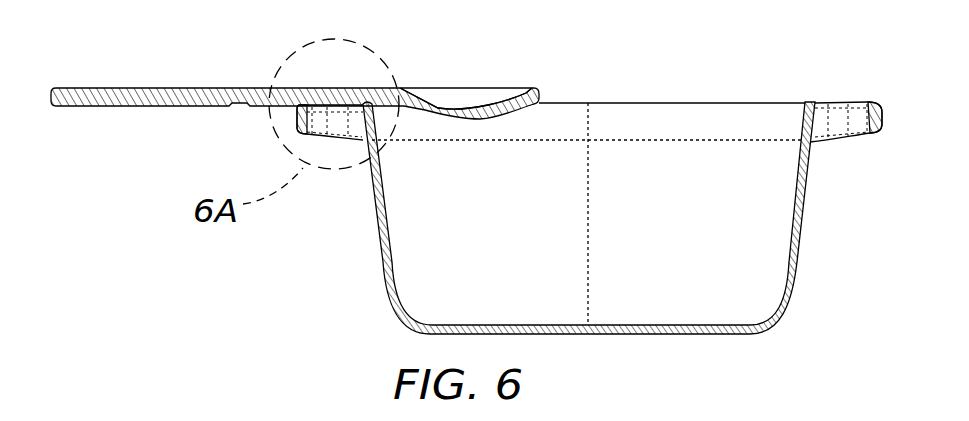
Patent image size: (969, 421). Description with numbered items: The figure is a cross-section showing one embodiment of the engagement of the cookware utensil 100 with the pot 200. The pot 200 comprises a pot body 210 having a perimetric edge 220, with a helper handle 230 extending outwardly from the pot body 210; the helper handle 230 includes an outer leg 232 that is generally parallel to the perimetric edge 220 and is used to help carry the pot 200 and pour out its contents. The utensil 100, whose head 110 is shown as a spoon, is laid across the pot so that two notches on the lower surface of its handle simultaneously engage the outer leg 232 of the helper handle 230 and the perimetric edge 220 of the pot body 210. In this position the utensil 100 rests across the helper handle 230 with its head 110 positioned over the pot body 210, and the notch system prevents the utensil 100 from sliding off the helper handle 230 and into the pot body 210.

The cookware utensil 100 is at (313, 109).
The head 110 is at (495, 97).
The pot 200 is at (544, 168).
The pot body 210 is at (802, 212).
The perimetric edge 220 is at (375, 118).
The helper handle 230 is at (876, 100).
The outer leg 232 is at (293, 118).